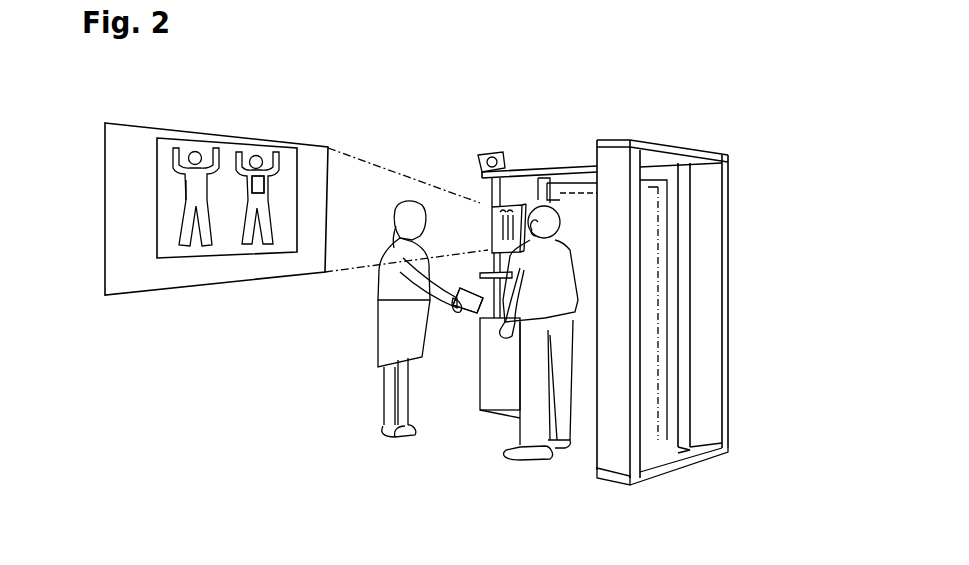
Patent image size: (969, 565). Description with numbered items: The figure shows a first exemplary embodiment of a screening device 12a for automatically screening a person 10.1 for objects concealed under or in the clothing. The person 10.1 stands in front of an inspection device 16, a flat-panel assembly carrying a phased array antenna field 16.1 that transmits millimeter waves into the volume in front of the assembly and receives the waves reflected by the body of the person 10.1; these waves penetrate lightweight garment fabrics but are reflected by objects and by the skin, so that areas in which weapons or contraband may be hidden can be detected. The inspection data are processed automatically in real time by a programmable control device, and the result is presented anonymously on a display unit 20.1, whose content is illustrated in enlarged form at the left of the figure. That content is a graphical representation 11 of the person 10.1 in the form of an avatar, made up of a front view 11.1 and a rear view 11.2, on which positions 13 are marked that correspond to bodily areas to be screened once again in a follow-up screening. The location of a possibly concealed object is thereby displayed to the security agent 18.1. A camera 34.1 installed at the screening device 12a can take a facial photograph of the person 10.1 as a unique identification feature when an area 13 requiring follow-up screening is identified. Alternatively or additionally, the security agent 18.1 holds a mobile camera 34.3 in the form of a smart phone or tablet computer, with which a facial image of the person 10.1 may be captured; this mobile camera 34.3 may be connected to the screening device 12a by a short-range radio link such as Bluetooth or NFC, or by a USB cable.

The display unit 20.1 is at (129, 160).
The graphical representation 11 is at (254, 156).
The marked positions 13 is at (264, 168).
The front view 11.1 is at (193, 192).
The rear view 11.2 is at (264, 194).
The security agent 18.1 is at (393, 207).
The mobile camera 34.3 is at (466, 312).
The camera 34.1 is at (489, 153).
The person 10.1 is at (560, 180).
The inspection device 16 is at (712, 282).
The screening device 12a is at (758, 156).
The phased array antenna field 16.1 is at (647, 307).